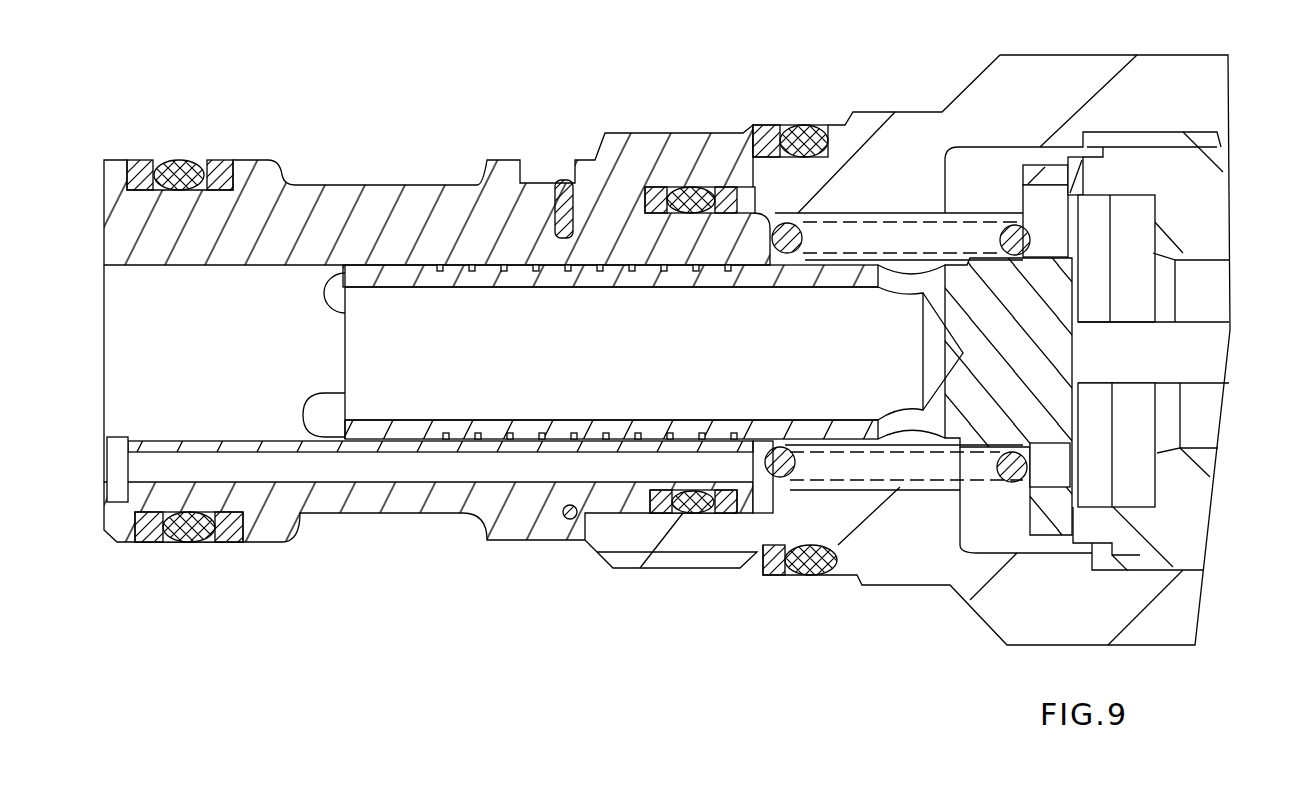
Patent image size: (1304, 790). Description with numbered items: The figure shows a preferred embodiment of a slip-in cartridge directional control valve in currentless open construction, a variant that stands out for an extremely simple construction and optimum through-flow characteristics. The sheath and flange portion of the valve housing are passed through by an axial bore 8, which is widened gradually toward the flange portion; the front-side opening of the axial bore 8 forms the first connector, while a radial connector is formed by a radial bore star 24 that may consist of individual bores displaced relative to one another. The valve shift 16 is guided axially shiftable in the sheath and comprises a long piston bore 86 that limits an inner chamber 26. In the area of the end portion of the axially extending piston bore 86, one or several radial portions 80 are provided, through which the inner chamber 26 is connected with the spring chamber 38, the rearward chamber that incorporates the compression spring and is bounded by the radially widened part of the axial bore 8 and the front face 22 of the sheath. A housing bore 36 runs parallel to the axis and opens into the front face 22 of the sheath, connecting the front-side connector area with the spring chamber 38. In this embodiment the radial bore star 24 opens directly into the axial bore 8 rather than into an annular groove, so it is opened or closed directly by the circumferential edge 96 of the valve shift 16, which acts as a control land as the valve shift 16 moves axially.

The axial bore 8 is at (258, 290).
The spring chamber 38 is at (890, 237).
The inner chamber 26 is at (666, 331).
The housing bore 36 is at (257, 478).
The radial bore star 24 is at (316, 420).
The circumferential edge 96 is at (355, 432).
The valve shift 16 is at (525, 430).
The piston bore 86 is at (628, 410).
The front face 22 is at (763, 512).
The radial portions 80 is at (893, 433).